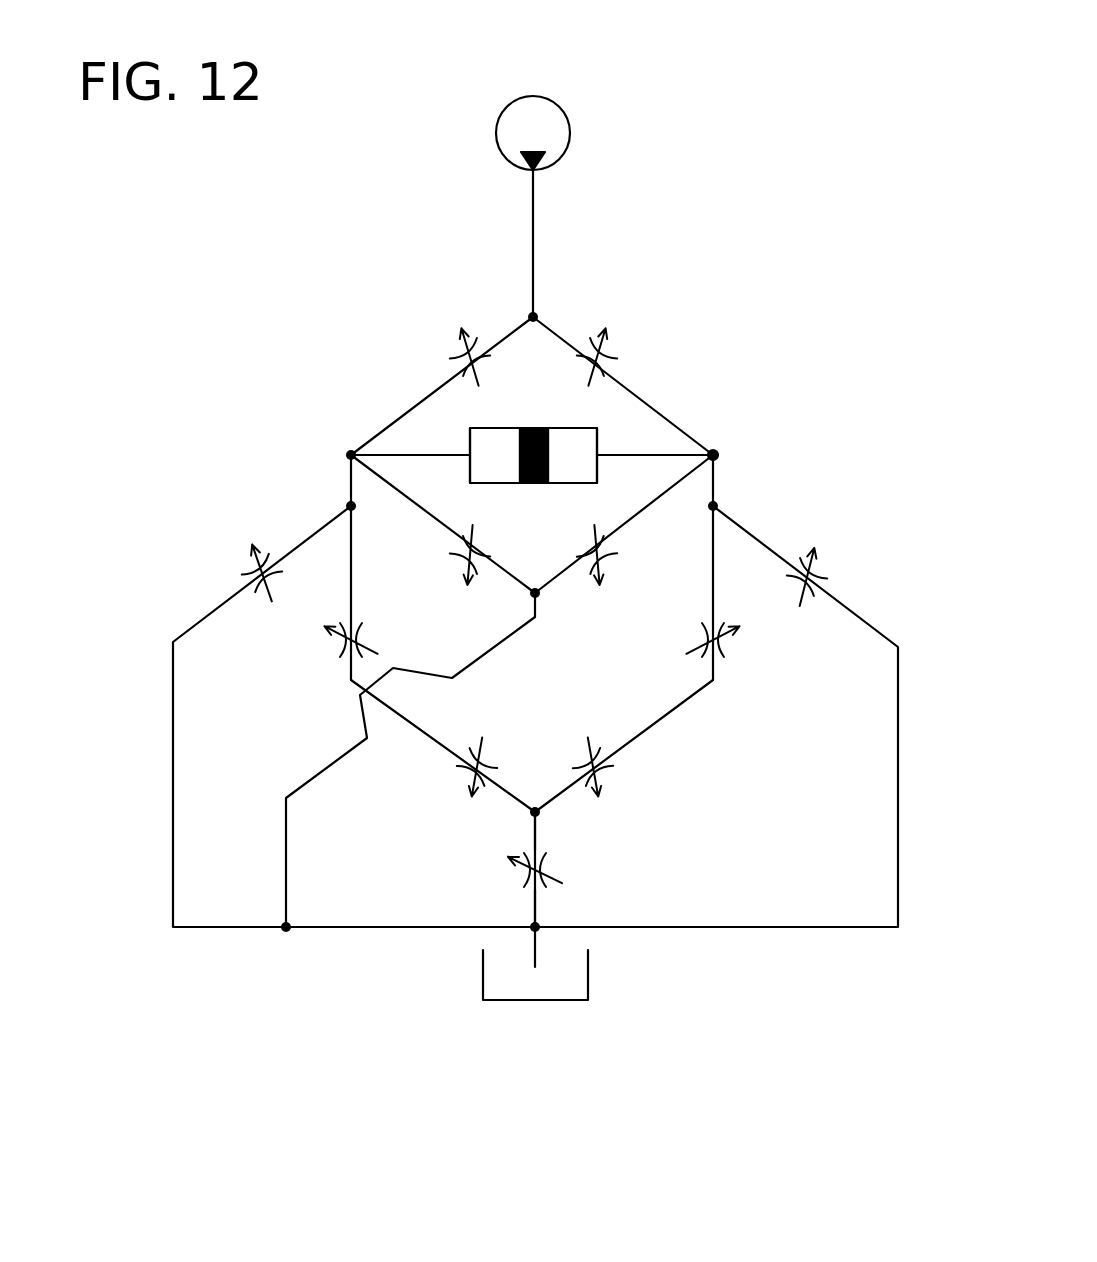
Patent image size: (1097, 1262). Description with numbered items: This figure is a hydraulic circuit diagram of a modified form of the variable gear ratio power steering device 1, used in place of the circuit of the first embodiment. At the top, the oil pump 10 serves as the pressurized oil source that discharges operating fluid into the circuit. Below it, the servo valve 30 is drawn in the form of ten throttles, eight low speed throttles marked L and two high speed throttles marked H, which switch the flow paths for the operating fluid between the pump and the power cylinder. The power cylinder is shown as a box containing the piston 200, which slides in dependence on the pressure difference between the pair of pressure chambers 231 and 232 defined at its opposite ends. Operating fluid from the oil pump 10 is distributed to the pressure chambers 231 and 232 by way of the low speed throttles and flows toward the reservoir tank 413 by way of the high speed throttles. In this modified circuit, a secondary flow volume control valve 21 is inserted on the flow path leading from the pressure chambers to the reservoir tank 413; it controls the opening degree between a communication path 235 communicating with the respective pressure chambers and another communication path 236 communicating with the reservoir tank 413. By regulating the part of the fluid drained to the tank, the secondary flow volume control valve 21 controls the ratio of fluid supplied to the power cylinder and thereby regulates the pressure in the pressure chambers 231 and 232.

The variable gear ratio power steering device 1 is at (822, 172).
The oil pump 10 is at (548, 122).
The piston 200 is at (537, 428).
The pressure chamber 231 is at (490, 447).
The pressure chamber 232 is at (577, 450).
The servo valve 30 is at (743, 465).
The communication path 235 is at (535, 833).
The secondary flow volume control valve 21 is at (557, 862).
The communication path 236 is at (535, 907).
The reservoir tank 413 is at (592, 980).